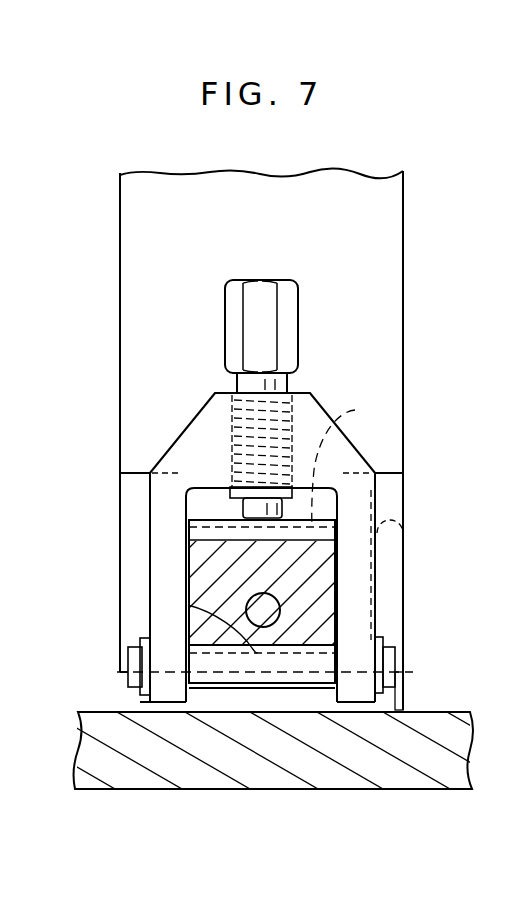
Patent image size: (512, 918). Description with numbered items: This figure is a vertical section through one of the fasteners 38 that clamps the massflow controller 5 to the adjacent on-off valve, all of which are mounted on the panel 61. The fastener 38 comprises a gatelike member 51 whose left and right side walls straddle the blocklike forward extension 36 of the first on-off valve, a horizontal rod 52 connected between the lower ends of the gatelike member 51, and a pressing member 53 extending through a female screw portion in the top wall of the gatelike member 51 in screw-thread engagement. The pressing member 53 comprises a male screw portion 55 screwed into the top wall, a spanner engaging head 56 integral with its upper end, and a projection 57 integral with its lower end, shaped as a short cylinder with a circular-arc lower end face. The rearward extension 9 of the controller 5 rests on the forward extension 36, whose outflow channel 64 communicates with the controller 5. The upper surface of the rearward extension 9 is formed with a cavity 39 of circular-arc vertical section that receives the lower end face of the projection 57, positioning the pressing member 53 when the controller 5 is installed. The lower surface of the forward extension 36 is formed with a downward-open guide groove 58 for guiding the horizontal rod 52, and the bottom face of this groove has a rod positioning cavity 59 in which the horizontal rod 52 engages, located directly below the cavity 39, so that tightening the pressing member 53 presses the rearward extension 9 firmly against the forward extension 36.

The massflow controller 5 is at (380, 298).
The rearward extension 9 is at (328, 533).
The forward extension 36 is at (325, 595).
The fastener 38 is at (322, 403).
The cavity 39 is at (357, 514).
The gatelike member 51 is at (167, 558).
The horizontal rod 52 is at (252, 682).
The pressing member 53 is at (233, 332).
The male screw portion 55 is at (232, 437).
The spanner engaging head 56 is at (265, 297).
The projection 57 is at (243, 508).
The guide groove 58 is at (312, 650).
The rod positioning cavity 59 is at (218, 647).
The panel 61 is at (423, 717).
The outflow channel 64 is at (265, 613).